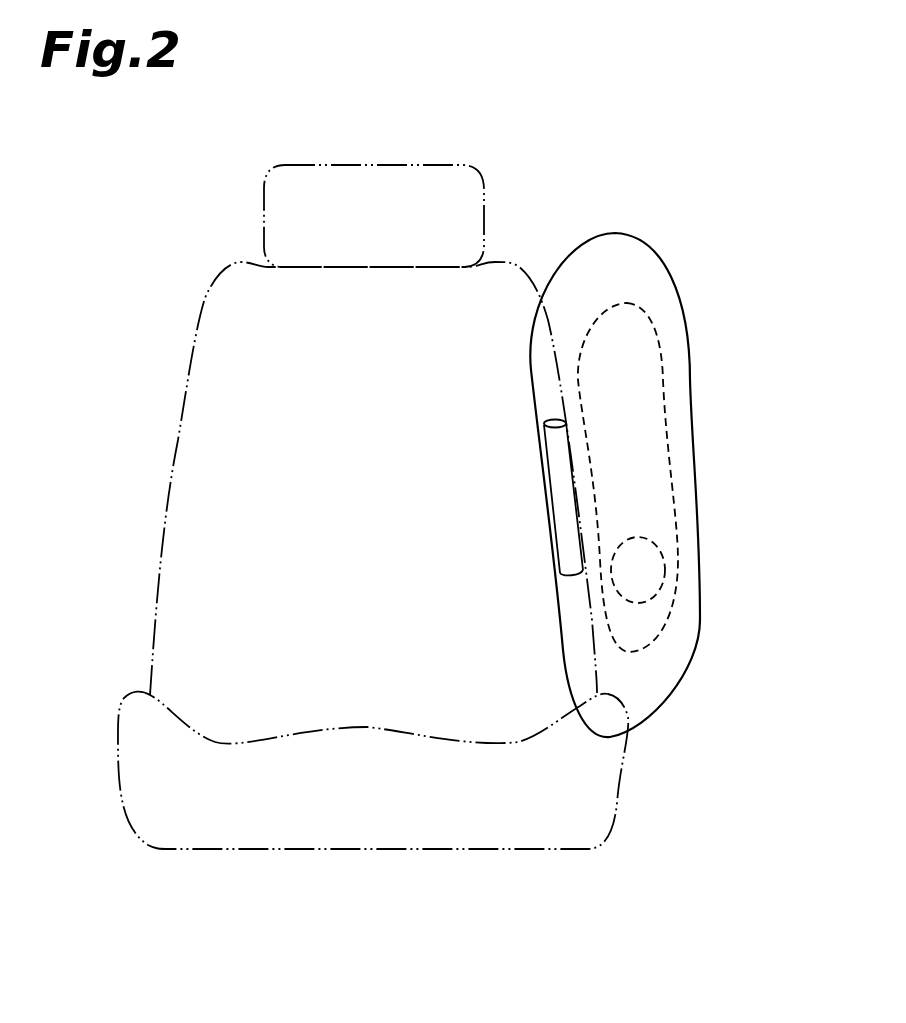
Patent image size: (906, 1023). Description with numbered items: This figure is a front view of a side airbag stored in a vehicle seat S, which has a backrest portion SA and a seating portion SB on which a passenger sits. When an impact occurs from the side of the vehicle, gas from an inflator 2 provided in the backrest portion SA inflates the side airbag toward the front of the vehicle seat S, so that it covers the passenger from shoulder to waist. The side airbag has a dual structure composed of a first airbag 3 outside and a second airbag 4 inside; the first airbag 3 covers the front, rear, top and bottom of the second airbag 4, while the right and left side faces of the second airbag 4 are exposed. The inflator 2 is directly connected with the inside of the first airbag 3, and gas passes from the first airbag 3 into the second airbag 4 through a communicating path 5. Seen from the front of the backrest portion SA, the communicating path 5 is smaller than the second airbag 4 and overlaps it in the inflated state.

The inflator 2 is at (567, 477).
The first airbag 3 is at (658, 302).
The second airbag 4 is at (650, 637).
The communicating path 5 is at (650, 578).
The vehicle seat S is at (456, 509).
The backrest portion SA is at (555, 655).
The seating portion SB is at (575, 815).